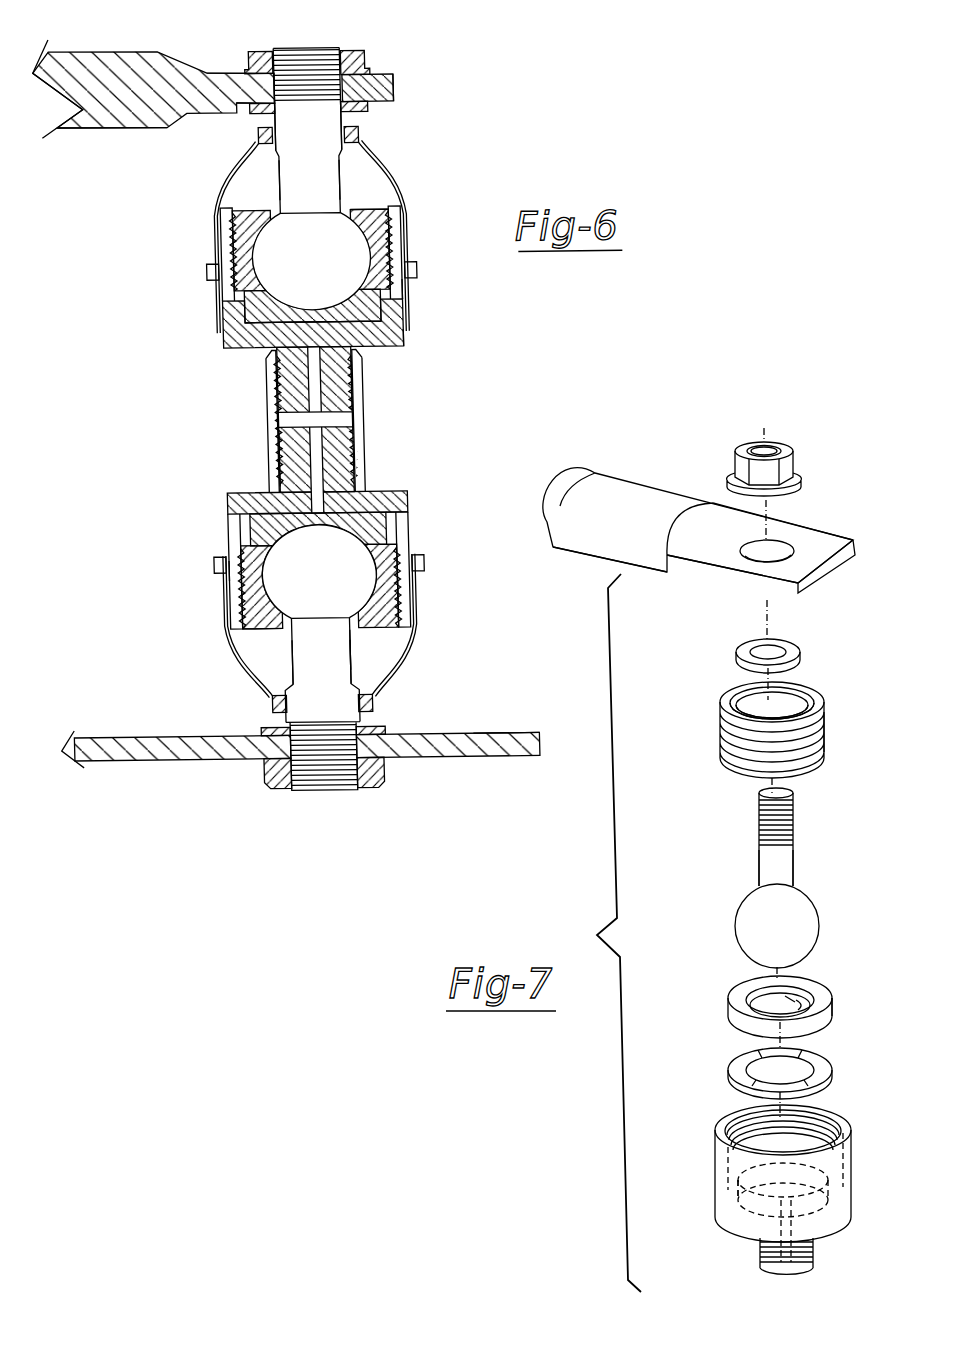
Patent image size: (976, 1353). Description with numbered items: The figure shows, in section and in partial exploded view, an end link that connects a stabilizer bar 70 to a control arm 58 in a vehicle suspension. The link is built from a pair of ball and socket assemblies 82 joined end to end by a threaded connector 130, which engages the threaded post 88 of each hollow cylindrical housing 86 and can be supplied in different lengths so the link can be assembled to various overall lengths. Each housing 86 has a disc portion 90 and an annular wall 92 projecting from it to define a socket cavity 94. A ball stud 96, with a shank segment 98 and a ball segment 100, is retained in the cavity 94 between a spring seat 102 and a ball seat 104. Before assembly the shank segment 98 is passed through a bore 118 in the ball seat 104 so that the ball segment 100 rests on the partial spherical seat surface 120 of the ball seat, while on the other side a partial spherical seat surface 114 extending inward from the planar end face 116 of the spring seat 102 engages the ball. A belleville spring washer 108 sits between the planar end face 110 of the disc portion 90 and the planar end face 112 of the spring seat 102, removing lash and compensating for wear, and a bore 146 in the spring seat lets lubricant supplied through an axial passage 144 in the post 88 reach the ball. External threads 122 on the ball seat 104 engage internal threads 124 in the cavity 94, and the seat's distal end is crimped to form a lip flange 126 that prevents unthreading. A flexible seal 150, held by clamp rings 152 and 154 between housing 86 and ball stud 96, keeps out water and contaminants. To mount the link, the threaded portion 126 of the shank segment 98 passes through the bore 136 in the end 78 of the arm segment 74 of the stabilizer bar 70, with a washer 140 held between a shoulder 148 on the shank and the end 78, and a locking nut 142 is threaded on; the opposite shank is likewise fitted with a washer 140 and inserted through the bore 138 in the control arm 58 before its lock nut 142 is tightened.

In FIG. 6, the control arm 58 is at (521, 687).
In FIG. 6, the stabilizer bar 70 is at (153, 70).
In FIG. 7, the stabilizer bar 70 is at (618, 500).
In FIG. 6, the arm segment 74 is at (113, 153).
In FIG. 7, the arm segment 74 is at (663, 495).
In FIG. 6, the end of arm segment 78 is at (293, 52).
In FIG. 7, the end of arm segment 78 is at (815, 545).
In FIG. 6, the ball and socket assembly 82 is at (380, 426).
In FIG. 6, the hollow cylindrical housing 86 is at (355, 278).
In FIG. 7, the hollow cylindrical housing 86 is at (713, 1205).
In FIG. 6, the threaded post 88 is at (371, 418).
In FIG. 7, the threaded post 88 is at (813, 1256).
In FIG. 6, the disc portion 90 is at (328, 489).
In FIG. 6, the annular wall 92 is at (450, 438).
In FIG. 6, the socket cavity 94 is at (316, 426).
In FIG. 7, the socket cavity 94 is at (740, 1155).
In FIG. 6, the ball stud 96 is at (250, 393).
In FIG. 7, the ball stud 96 is at (796, 862).
In FIG. 6, the shank segment 98 is at (319, 419).
In FIG. 7, the shank segment 98 is at (783, 858).
In FIG. 6, the ball segment 100 is at (315, 415).
In FIG. 7, the ball segment 100 is at (806, 915).
In FIG. 6, the spring seat 102 is at (317, 431).
In FIG. 7, the spring seat 102 is at (725, 1010).
In FIG. 6, the ball seat 104 is at (370, 432).
In FIG. 7, the ball seat 104 is at (828, 712).
In FIG. 6, the belleville spring washer 108 is at (443, 434).
In FIG. 7, the belleville spring washer 108 is at (836, 1076).
In FIG. 7, the planar end face of housing disc portion 110 is at (808, 1004).
In FIG. 7, the planar end face of spring seat 112 is at (735, 1188).
In FIG. 6, the partial spherical seat surface 114 is at (181, 403).
In FIG. 7, the partial spherical seat surface 114 is at (752, 995).
In FIG. 7, the opposite planar end face 116 is at (828, 992).
In FIG. 7, the bore 118 is at (788, 700).
In FIG. 6, the partial spherical seat surface 120 is at (310, 404).
In FIG. 7, the partial spherical seat surface 120 is at (758, 700).
In FIG. 7, the external threads 122 is at (822, 745).
In FIG. 7, the internal threads 124 is at (745, 1125).
In FIG. 6, the external threads 126 is at (390, 419).
In FIG. 7, the external threads 126 is at (760, 815).
In FIG. 6, the threaded connector 130 is at (374, 420).
In FIG. 6, the bore 136 is at (438, 80).
In FIG. 7, the bore 136 is at (757, 556).
In FIG. 6, the bore 138 is at (301, 776).
In FIG. 6, the washer 140 is at (377, 409).
In FIG. 7, the washer 140 is at (795, 643).
In FIG. 6, the locking nut 142 is at (363, 427).
In FIG. 7, the locking nut 142 is at (800, 462).
In FIG. 6, the axial passage 144 is at (314, 421).
In FIG. 7, the axial passage 144 is at (775, 1232).
In FIG. 7, the bore 146 is at (795, 1004).
In FIG. 6, the shoulder 148 is at (226, 141).
In FIG. 6, the flexible seal 150 is at (273, 419).
In FIG. 6, the clamp ring 152 is at (329, 425).
In FIG. 6, the clamp ring 154 is at (380, 447).